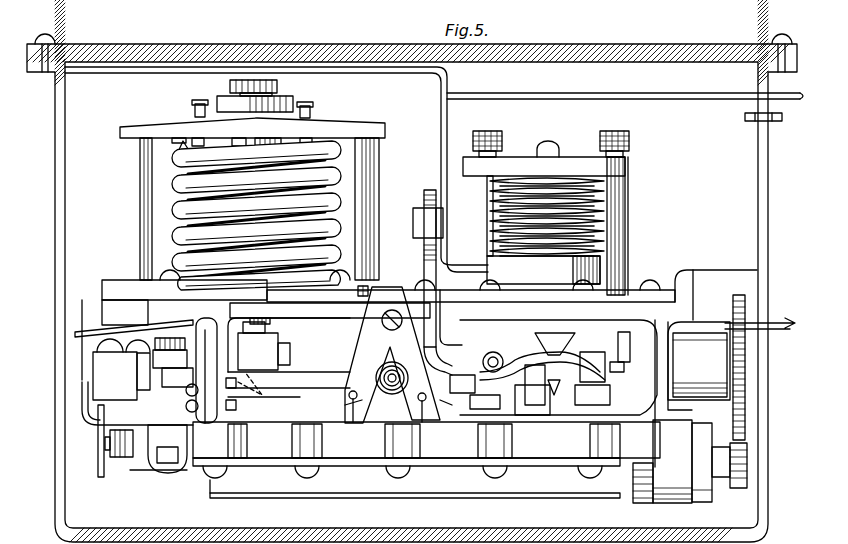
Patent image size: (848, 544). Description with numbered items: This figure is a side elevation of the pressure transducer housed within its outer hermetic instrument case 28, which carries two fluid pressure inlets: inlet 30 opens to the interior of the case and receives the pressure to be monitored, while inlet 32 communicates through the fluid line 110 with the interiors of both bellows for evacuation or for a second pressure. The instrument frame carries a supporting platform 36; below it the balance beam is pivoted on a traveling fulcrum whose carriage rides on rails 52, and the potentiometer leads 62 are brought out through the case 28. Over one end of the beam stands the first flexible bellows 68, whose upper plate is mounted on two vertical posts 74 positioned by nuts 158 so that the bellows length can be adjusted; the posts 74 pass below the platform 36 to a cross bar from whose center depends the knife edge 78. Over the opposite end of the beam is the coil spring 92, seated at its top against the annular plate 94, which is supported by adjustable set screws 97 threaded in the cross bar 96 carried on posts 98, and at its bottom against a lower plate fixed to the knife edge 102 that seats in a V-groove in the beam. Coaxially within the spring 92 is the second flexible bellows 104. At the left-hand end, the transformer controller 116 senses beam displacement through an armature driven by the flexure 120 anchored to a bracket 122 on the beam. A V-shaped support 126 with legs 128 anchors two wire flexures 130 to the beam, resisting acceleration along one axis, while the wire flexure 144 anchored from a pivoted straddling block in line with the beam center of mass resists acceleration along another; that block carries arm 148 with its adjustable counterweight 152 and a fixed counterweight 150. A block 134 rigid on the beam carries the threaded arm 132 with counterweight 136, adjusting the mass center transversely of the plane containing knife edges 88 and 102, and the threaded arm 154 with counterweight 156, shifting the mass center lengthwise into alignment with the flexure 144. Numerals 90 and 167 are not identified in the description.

The instrument case 28 is at (767, 198).
The fluid pressure inlet 30 is at (782, 119).
The fluid pressure inlet 32 is at (800, 99).
The supporting platform 36 is at (370, 293).
The rails 52 is at (450, 488).
The leads 62 is at (728, 399).
The first flexible bellows 68 is at (602, 200).
The vertical posts 74 is at (488, 190).
The knife edge 78 is at (588, 372).
The knife edge 88 is at (537, 405).
The switch frame 90 is at (518, 343).
The coil spring 92 is at (272, 157).
The annular plate 94 is at (184, 150).
The cross bar 96 is at (170, 127).
The adjustable set screws 97 is at (201, 103).
The posts 98 is at (140, 237).
The knife edge 102 is at (260, 381).
The second flexible bellows 104 is at (185, 182).
The fluid line 110 is at (445, 82).
The transformer controller 116 is at (74, 316).
The flexure 120 is at (100, 426).
The bracket 122 is at (106, 472).
The V-shaped support 126 is at (372, 337).
The legs 128 is at (355, 405).
The wire flexures 130 is at (352, 397).
The threaded arm 132 is at (424, 250).
The block 134 is at (475, 393).
The counterweight 136 is at (415, 212).
The wire flexure 144 is at (452, 352).
The arm 148 is at (248, 388).
The counterweight 150 is at (270, 366).
The second counterweight 152 is at (100, 374).
The threaded arm 154 is at (626, 355).
The counterweight 156 is at (624, 367).
The nuts 158 is at (500, 142).
The spring coil 167 is at (392, 385).